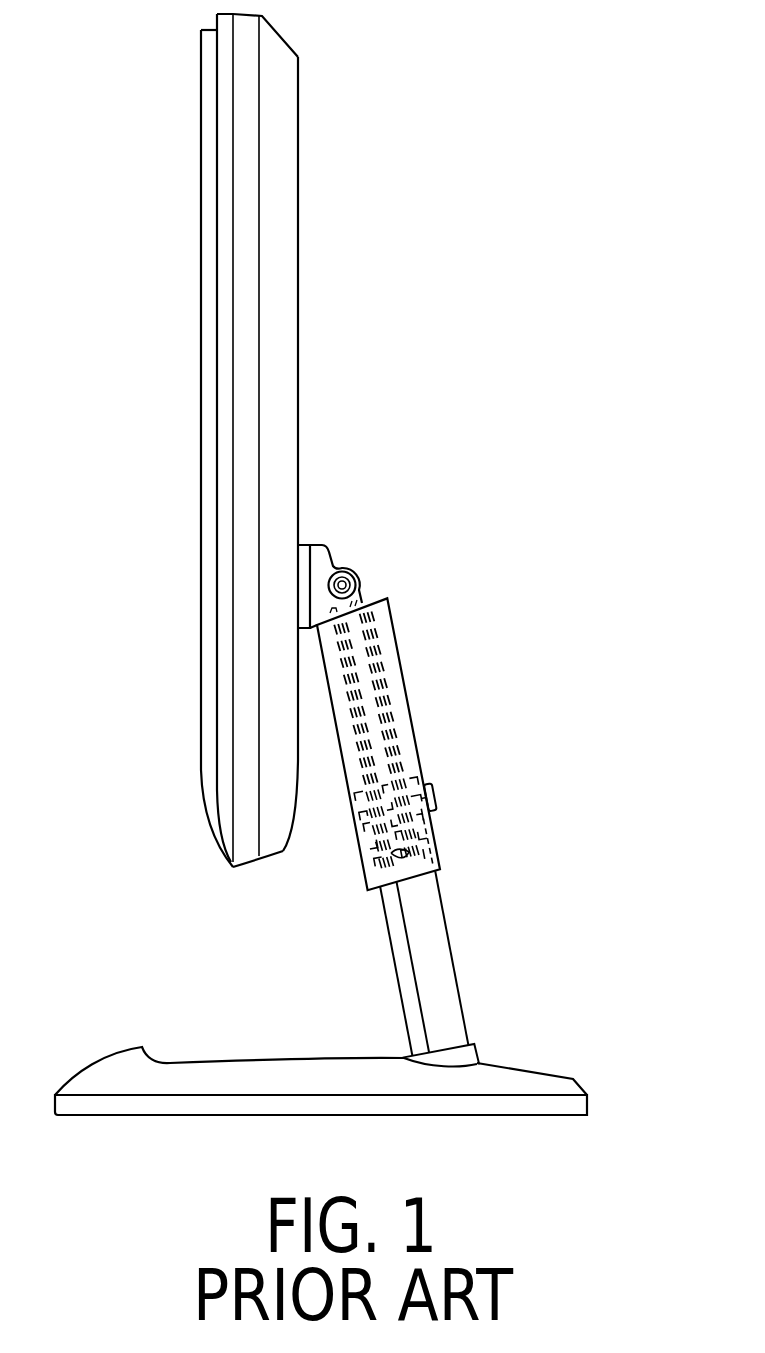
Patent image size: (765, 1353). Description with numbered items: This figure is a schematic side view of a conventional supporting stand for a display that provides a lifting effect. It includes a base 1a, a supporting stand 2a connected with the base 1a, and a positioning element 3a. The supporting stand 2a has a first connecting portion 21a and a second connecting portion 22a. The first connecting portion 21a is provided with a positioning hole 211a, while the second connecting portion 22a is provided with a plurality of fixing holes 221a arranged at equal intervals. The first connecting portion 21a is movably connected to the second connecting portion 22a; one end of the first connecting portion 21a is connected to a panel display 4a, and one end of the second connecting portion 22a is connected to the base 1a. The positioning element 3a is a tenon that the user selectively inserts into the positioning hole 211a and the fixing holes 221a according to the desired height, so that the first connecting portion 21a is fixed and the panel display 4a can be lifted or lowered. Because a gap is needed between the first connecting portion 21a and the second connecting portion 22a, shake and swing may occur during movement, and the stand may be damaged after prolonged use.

The base 1a is at (545, 1073).
The supporting stand 2a is at (638, 673).
The first connecting portion 21a is at (403, 702).
The positioning hole 211a is at (423, 767).
The second connecting portion 22a is at (435, 930).
The fixing holes 221a is at (390, 847).
The positioning element 3a is at (436, 796).
The panel display 4a is at (300, 228).